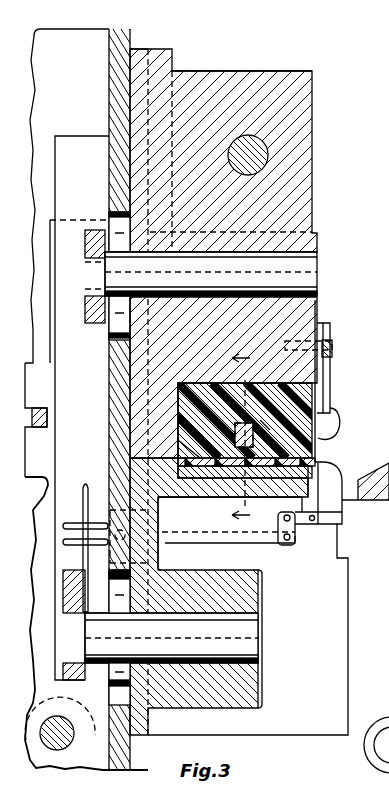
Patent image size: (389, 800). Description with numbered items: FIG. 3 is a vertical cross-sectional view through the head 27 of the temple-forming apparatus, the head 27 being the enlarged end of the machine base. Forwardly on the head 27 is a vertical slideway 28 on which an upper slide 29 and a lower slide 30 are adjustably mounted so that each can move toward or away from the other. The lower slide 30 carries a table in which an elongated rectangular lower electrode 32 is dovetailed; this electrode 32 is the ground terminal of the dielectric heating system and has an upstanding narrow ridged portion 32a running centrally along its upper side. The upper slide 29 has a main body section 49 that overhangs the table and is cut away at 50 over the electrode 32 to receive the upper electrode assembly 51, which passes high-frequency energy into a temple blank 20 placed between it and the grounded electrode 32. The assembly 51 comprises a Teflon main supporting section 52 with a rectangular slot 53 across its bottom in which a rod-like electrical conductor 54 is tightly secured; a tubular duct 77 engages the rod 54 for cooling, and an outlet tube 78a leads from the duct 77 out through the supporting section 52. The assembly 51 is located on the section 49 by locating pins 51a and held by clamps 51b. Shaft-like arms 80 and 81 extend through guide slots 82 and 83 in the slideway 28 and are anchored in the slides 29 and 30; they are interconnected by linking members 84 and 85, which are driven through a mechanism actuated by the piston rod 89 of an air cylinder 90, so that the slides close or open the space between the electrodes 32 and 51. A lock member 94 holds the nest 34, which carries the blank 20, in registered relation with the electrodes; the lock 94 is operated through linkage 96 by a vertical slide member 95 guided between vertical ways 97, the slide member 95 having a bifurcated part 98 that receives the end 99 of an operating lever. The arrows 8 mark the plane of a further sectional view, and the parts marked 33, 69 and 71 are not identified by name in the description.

The section line 8- 8 is at (249, 440).
The temple blank 20 is at (255, 478).
The head part 27 is at (378, 36).
The vertical slideway 28 is at (140, 26).
The upper slide 29 is at (268, 67).
The lower slide 30 is at (272, 744).
The electrode 32 is at (210, 483).
The ridged portion 32a is at (230, 478).
The cap 33 is at (328, 462).
The nest 34 is at (195, 457).
The main body section 49 is at (312, 317).
The cut away 50 is at (213, 380).
The upper electrode assembly 51 is at (312, 402).
The locating pins 51a is at (178, 386).
The clamps 51b is at (330, 368).
The main supporting section 52 is at (178, 414).
The rectangular slot 53 is at (202, 426).
The electrical conductor 54 is at (255, 440).
The shaft 69 is at (264, 153).
The upper block 71 is at (310, 187).
The tubular duct 77 is at (272, 410).
The outlet tube 78a is at (340, 411).
The shaft-like arm 80 is at (310, 272).
The shaft-like arm 81 is at (250, 632).
The guide slot 82 is at (120, 228).
The guide slot 83 is at (120, 676).
The linking member 84 is at (85, 250).
The linking member 85 is at (63, 662).
The piston rod 89 is at (57, 750).
The air cylinder 90 is at (96, 762).
The lock member 94 is at (330, 495).
The vertical slide member 95 is at (50, 225).
The linkage 96 is at (296, 545).
The vertical ways 97 is at (70, 148).
The bifurcated part 98 is at (40, 460).
The lever end 99 is at (48, 413).